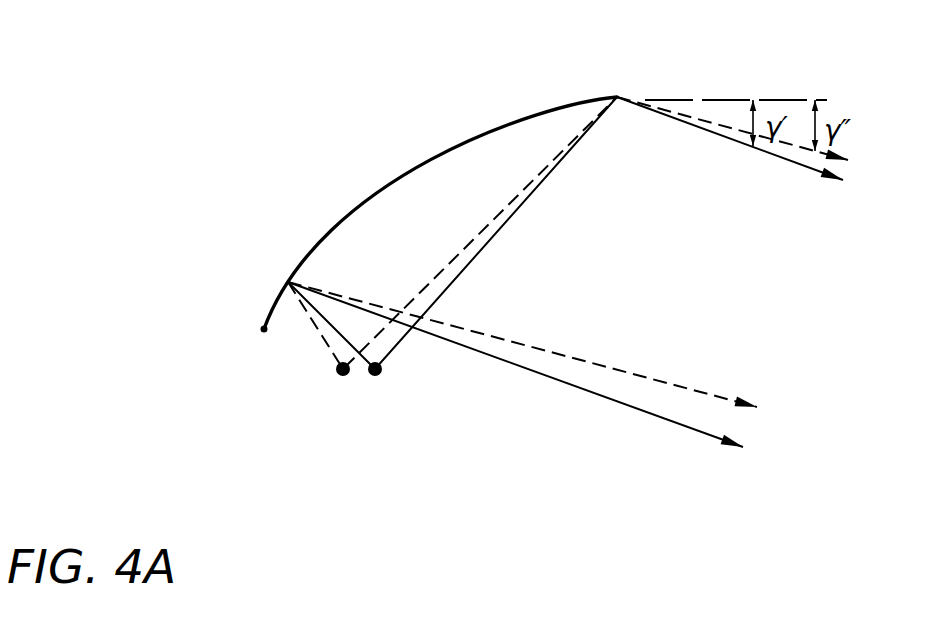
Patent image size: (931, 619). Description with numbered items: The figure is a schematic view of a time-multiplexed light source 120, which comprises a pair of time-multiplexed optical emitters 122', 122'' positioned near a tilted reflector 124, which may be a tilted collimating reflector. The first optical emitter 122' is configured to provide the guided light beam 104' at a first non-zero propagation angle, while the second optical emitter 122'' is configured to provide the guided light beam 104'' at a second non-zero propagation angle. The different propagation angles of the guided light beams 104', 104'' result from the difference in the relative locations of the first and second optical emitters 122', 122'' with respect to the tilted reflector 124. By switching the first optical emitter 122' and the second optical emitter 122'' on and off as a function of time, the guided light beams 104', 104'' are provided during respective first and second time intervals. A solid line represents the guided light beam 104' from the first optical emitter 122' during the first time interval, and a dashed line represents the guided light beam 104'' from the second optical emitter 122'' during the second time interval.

The time-multiplexed light source 120 is at (272, 63).
The tilted reflector 124 is at (458, 148).
The first optical emitter 122' is at (410, 296).
The second optical emitter 122'' is at (412, 273).
The guided light beam 104' is at (565, 272).
The guided light beam 104'' is at (568, 228).